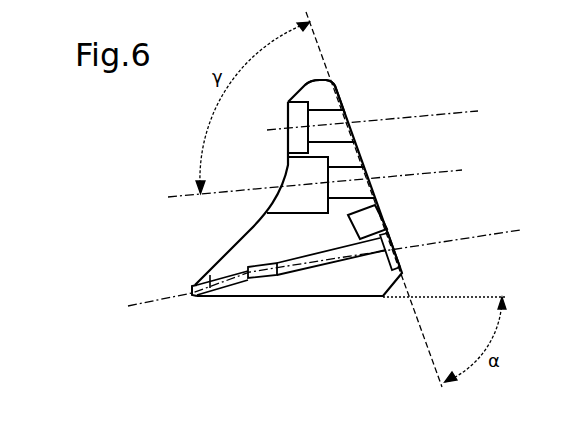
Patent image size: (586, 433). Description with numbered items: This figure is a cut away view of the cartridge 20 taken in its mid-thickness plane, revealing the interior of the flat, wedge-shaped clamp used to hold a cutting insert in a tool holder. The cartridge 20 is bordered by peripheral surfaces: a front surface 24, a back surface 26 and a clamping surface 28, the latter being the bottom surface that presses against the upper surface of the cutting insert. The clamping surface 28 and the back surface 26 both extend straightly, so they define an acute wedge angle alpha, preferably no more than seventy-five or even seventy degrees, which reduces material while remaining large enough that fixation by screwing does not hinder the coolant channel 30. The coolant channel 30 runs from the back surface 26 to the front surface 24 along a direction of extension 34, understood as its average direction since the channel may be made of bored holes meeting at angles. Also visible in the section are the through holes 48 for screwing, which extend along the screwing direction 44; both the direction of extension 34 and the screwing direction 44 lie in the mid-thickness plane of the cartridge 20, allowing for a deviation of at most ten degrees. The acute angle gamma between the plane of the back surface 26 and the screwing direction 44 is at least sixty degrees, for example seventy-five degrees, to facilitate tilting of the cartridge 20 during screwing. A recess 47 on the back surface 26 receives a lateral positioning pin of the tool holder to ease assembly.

The cartridge 20 is at (153, 213).
The front surface 24 is at (246, 235).
The back surface 26 is at (340, 93).
The clamping surface 28 is at (200, 298).
The coolant channel 30 is at (308, 270).
The direction of extension 34 is at (497, 234).
The screwing direction 44 is at (441, 113).
The recess 47 is at (352, 228).
The through holes 48 is at (352, 163).